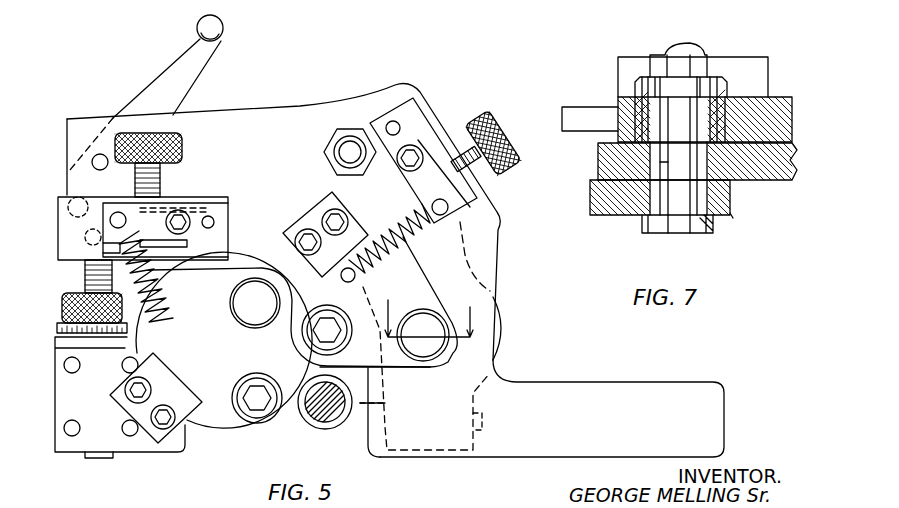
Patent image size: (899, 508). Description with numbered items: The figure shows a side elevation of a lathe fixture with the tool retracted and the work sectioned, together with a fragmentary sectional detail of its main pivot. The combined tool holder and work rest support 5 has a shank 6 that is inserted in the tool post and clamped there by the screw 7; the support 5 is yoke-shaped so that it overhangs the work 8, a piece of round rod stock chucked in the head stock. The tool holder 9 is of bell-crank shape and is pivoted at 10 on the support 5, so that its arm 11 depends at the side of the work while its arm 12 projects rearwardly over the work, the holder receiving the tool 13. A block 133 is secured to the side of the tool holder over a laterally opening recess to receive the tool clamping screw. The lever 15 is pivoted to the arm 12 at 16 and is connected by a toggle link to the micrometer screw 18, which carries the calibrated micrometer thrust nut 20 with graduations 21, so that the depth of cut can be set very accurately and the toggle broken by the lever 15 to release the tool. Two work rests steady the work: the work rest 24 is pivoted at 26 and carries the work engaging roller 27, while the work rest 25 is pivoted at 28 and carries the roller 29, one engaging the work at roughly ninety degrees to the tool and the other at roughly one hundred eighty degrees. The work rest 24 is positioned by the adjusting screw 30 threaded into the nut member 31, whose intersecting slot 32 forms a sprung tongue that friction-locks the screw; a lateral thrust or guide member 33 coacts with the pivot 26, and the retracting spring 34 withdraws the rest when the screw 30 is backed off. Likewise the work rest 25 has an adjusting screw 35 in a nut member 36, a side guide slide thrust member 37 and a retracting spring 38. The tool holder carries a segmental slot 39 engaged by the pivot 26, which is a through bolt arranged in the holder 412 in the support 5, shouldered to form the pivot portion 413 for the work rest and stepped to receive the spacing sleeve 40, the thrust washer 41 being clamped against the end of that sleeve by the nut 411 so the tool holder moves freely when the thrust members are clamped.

In FIG. 5, the combined tool holder and work rest support 5 is at (490, 263).
In FIG. 7, the combined tool holder and work rest support 5 is at (764, 170).
In FIG. 5, the shank 6 is at (564, 395).
In FIG. 5, the screw 7 is at (431, 307).
In FIG. 5, the work 8 is at (323, 417).
In FIG. 7, the tool holder 9 is at (777, 103).
In FIG. 5, the pivot 10 is at (349, 150).
In FIG. 5, the arm 11 is at (503, 327).
In FIG. 5, the arm 12 is at (221, 122).
In FIG. 5, the tool 13 is at (367, 410).
In FIG. 7, the tool 13 is at (593, 122).
In FIG. 5, the lever 15 is at (144, 95).
In FIG. 5, the pivot 16 is at (92, 167).
In FIG. 5, the micrometer screw 18 is at (84, 273).
In FIG. 5, the micrometer thrust nut 20 is at (63, 302).
In FIG. 5, the calibration 21 is at (72, 328).
In FIG. 5, the work rest 24 is at (393, 366).
In FIG. 7, the work rest 24 is at (731, 214).
In FIG. 5, the work rest 25 is at (203, 421).
In FIG. 5, the pivot 26 is at (428, 328).
In FIG. 7, the pivot 26 is at (683, 221).
In FIG. 5, the work engaging roller 27 is at (290, 341).
In FIG. 5, the pivot 28 is at (246, 306).
In FIG. 5, the work engaging roller 29 is at (264, 432).
In FIG. 5, the adjusting screw 30 is at (504, 123).
In FIG. 5, the nut member 31 is at (423, 124).
In FIG. 5, the slot 32 is at (210, 216).
In FIG. 5, the lateral thrust or guide member 33 is at (311, 208).
In FIG. 5, the retracting spring 34 is at (410, 243).
In FIG. 5, the adjusting screw 35 is at (163, 182).
In FIG. 5, the nut member 36 is at (221, 228).
In FIG. 5, the side guide slide thrust member 37 is at (172, 387).
In FIG. 5, the retracting spring 38 is at (153, 301).
In FIG. 7, the segmental slot 39 is at (642, 117).
In FIG. 7, the spacer 40 is at (701, 90).
In FIG. 7, the thrust washer 41 is at (707, 93).
In FIG. 7, the block 133 is at (628, 65).
In FIG. 7, the nut 411 is at (683, 56).
In FIG. 7, the holder 412 is at (660, 162).
In FIG. 7, the pivot portion 413 is at (663, 208).